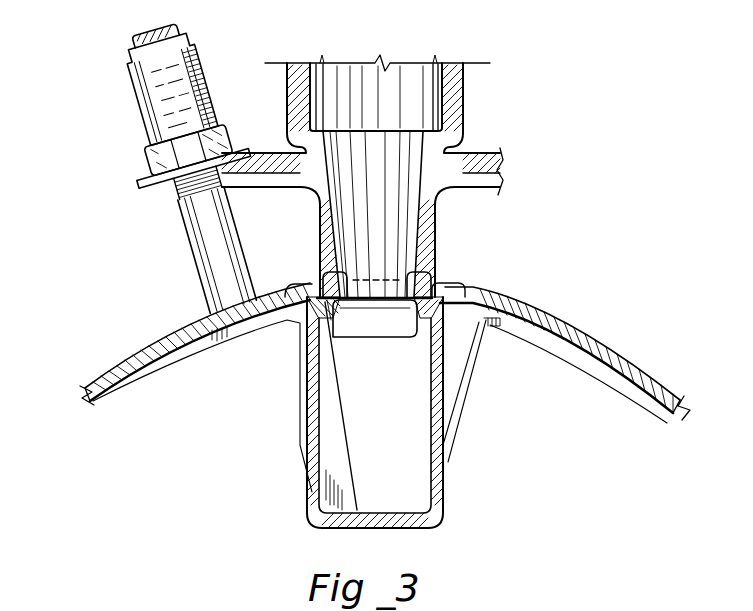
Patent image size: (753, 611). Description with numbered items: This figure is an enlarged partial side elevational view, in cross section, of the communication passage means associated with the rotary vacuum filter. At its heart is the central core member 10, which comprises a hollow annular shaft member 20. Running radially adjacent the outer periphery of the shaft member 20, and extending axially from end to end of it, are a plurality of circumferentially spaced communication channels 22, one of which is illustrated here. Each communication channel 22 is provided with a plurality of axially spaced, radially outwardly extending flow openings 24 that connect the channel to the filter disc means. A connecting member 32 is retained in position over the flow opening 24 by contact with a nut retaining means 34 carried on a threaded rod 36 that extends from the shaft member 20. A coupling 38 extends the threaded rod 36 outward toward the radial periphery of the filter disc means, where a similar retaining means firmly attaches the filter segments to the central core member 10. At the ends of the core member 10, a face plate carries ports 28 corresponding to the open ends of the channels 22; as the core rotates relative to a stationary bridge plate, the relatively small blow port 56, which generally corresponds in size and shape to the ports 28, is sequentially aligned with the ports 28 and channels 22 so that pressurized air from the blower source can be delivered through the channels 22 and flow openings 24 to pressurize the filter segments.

The central core member 10 is at (573, 318).
The hollow annular shaft member 20 is at (131, 351).
The communication channel 22 is at (442, 432).
The flow opening 24 is at (340, 279).
The port 28 is at (323, 405).
The connecting member 32 is at (457, 105).
The nut retaining means 34 is at (146, 164).
The threaded rod 36 is at (134, 47).
The coupling 38 is at (198, 68).
The blow port 56 is at (465, 370).